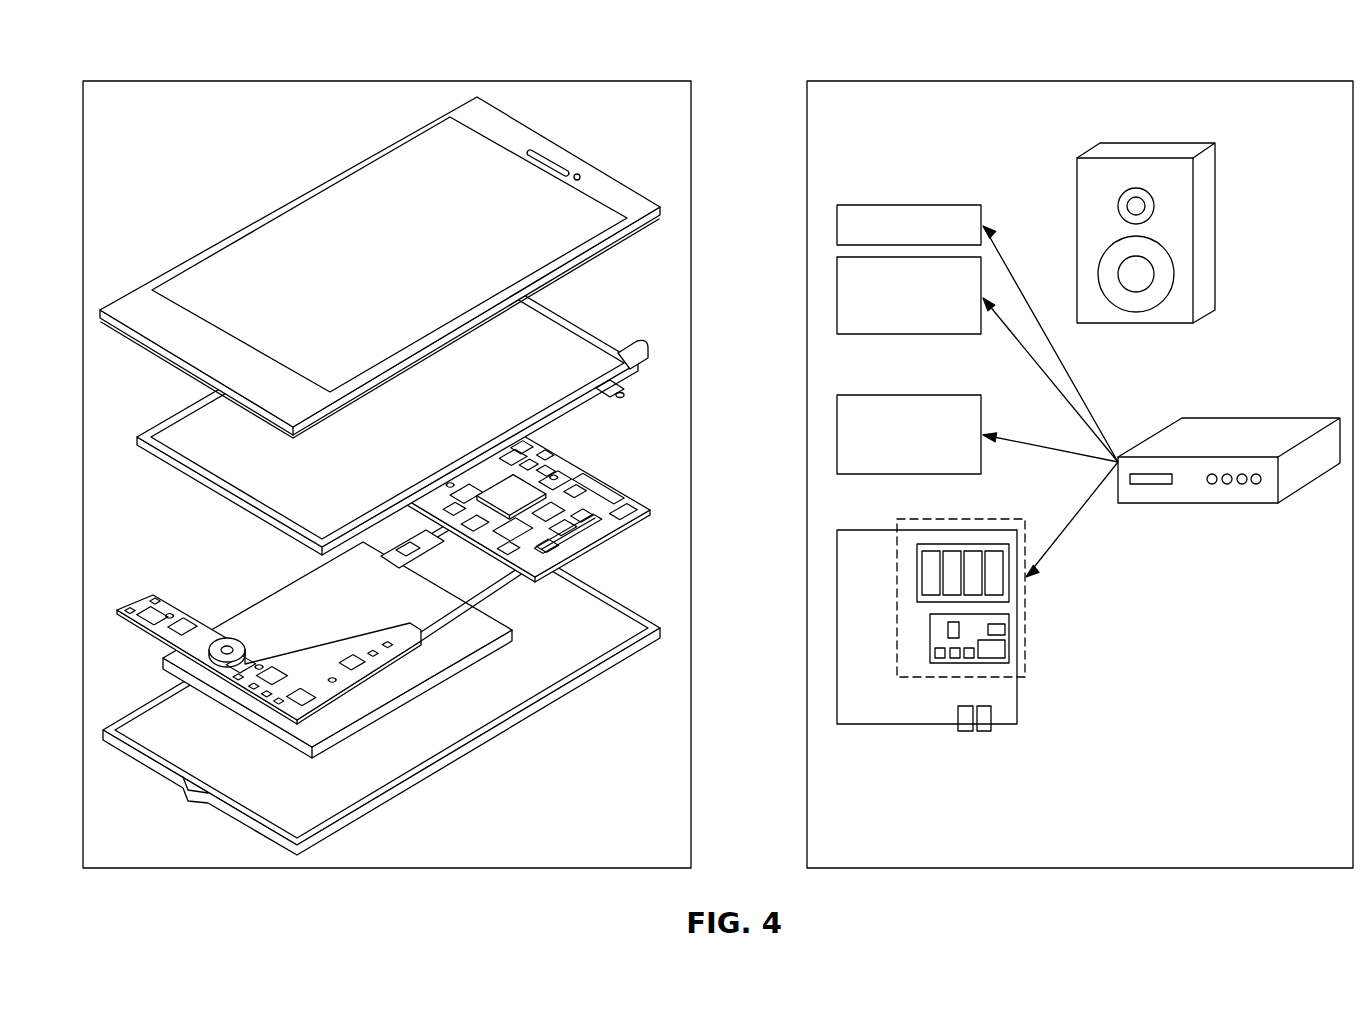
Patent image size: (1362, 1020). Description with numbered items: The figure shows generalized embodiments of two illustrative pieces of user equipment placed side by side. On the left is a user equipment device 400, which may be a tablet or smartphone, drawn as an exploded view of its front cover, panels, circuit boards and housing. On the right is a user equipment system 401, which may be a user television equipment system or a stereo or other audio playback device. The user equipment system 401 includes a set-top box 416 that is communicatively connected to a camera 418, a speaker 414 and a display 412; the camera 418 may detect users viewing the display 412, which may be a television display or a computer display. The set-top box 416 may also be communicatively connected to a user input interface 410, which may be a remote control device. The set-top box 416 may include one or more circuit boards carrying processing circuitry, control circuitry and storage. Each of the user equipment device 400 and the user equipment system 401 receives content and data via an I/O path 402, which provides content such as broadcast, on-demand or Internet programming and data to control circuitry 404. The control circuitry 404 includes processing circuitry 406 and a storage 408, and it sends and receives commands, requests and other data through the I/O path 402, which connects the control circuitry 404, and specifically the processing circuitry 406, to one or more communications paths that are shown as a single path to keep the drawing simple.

The user equipment device 400 is at (176, 50).
The user equipment system 401 is at (1253, 57).
The I/O path 402 is at (216, 664).
The control circuitry 404 is at (594, 551).
The processing circuitry 406 is at (929, 634).
The storage 408 is at (516, 490).
The user input interface 410 is at (555, 365).
The display 412 is at (627, 363).
The speaker 414 is at (1067, 227).
The set-top box 416 is at (1261, 418).
The camera 418 is at (604, 195).